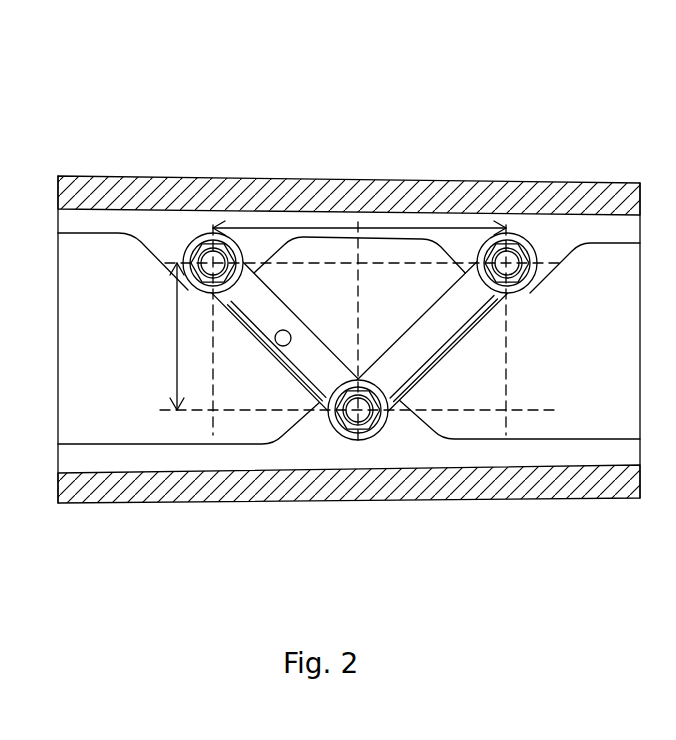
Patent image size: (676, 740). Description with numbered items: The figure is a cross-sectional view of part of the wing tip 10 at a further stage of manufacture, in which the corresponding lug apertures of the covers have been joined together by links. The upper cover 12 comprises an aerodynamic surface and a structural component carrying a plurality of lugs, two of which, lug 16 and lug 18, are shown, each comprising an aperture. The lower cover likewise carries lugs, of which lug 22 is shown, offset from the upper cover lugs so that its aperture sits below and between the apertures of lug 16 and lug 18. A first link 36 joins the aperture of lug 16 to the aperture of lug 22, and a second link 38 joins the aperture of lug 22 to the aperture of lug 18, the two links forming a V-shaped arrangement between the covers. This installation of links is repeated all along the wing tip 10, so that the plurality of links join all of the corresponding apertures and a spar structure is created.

The wing tip 10 is at (426, 127).
The upper cover 12 is at (593, 184).
The lug 16 is at (253, 245).
The lug 18 is at (549, 262).
The lug 22 is at (322, 427).
The first link 36 is at (279, 345).
The second link 38 is at (448, 325).